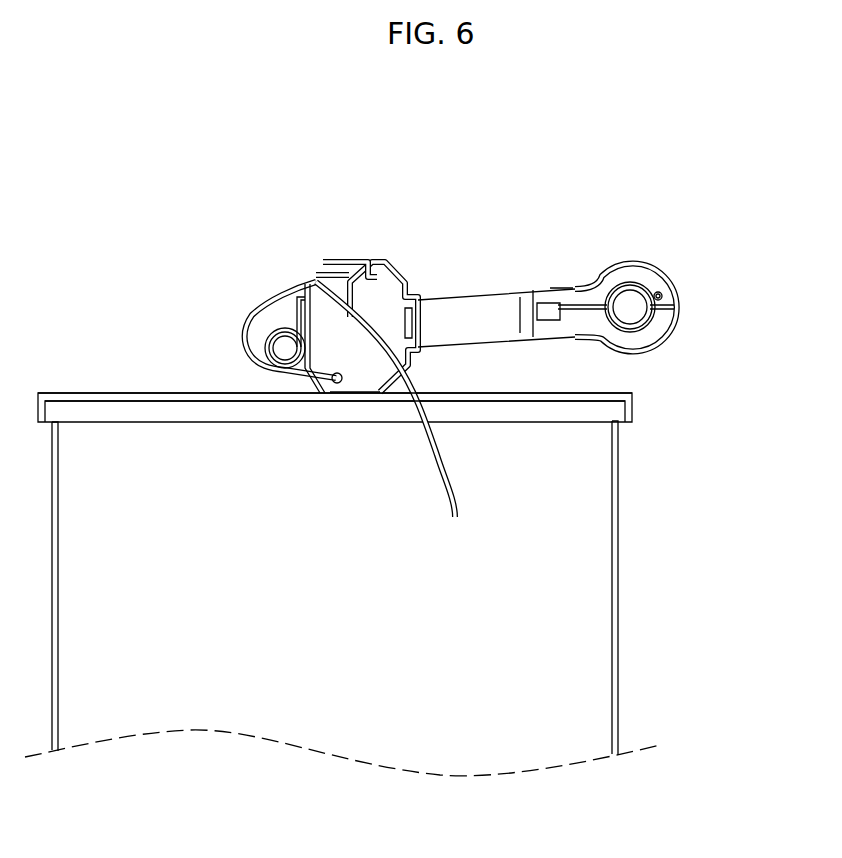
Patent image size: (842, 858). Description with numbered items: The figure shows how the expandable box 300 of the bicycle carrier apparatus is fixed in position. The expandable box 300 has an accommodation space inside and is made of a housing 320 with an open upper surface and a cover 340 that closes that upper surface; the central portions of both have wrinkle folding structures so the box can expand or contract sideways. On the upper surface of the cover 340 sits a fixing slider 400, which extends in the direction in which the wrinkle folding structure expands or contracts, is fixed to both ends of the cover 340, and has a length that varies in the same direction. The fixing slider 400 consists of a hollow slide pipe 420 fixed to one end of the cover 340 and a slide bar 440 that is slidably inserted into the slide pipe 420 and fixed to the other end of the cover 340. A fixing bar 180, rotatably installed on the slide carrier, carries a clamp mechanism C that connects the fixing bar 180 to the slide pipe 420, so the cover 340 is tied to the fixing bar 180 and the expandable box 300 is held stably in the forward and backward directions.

The fixing bar 180 is at (629, 303).
The clamp mechanism C is at (470, 305).
The expandable box 300 is at (411, 560).
The housing 320 is at (620, 615).
The cover 340 is at (600, 393).
The fixing slider 400 is at (262, 349).
The slide pipe 420 is at (279, 348).
The slide bar 440 is at (281, 370).